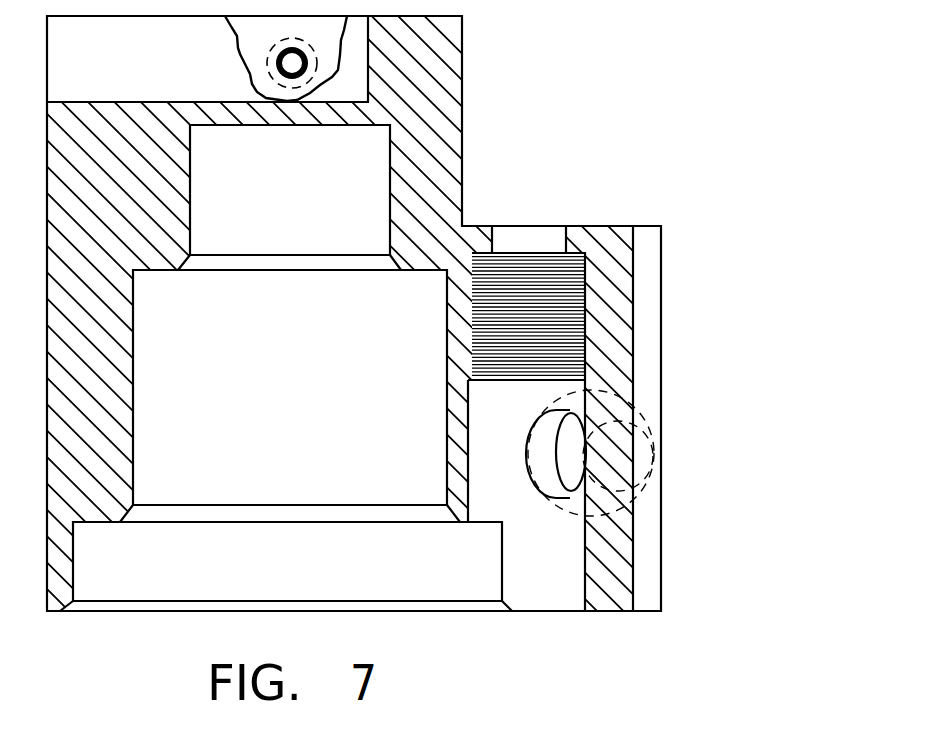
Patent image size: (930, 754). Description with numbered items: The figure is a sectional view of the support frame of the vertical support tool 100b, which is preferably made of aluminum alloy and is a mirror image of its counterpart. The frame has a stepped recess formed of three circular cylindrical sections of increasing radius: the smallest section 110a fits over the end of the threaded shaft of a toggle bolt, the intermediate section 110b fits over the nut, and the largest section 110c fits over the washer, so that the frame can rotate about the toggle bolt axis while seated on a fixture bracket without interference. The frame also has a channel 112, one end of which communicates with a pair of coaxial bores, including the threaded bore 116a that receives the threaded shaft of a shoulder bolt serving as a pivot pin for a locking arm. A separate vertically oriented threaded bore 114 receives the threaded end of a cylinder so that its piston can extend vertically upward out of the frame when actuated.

The vertical support tool 100b is at (669, 316).
The third circular cylindrical section of recess 110a is at (335, 197).
The second circular cylindrical section of recess 110b is at (288, 429).
The first circular cylindrical section of recess 110c is at (327, 582).
The channel 112 is at (108, 59).
The threaded bore 114 is at (572, 556).
The threaded bore 116a is at (276, 63).